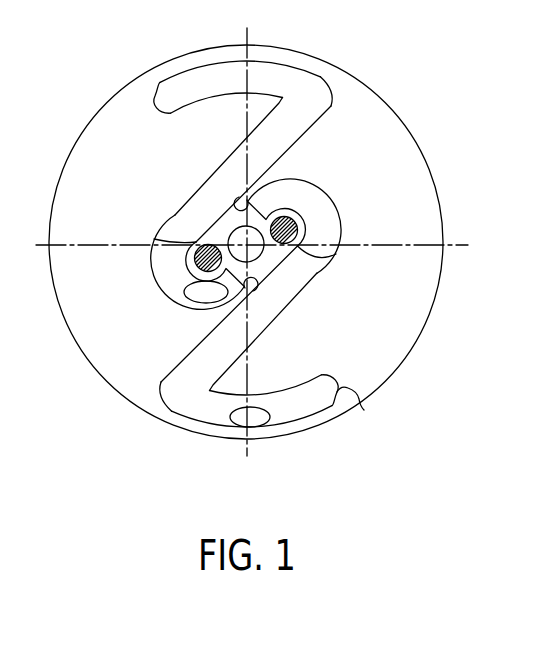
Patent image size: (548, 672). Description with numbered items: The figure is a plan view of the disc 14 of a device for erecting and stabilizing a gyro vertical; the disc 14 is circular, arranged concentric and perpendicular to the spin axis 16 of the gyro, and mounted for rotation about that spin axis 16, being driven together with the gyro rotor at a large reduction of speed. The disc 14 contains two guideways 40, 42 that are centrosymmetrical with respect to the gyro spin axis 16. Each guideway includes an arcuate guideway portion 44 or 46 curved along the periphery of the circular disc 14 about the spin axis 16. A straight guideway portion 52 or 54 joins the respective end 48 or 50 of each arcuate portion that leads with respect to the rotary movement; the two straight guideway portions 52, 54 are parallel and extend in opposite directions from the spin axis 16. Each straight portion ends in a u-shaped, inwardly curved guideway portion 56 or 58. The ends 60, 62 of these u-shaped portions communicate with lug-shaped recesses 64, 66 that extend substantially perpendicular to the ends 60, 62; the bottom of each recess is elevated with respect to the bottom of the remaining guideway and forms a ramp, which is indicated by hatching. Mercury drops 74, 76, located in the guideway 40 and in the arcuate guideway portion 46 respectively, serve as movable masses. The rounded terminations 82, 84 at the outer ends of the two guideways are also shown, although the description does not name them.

The disc 14 is at (378, 118).
The spin axis 16 is at (310, 282).
The guideway 40 is at (273, 62).
The guideway 42 is at (288, 428).
The arcuate guideway portion 44 is at (196, 78).
The arcuate guideway portion 46 is at (209, 417).
The end of arcuate guideway portion 48 is at (333, 100).
The end of arcuate guideway portion 50 is at (163, 384).
The straight guideway portion 52 is at (230, 158).
The straight guideway portion 54 is at (268, 322).
The u-shaped inwardly curved guideway portion 56 is at (168, 288).
The u-shaped inwardly curved guideway portion 58 is at (317, 226).
The end of u-shaped guideway portion 60 is at (257, 285).
The end of u-shaped guideway portion 62 is at (268, 170).
The lug-shaped recess 64 is at (200, 235).
The lug-shaped recess 66 is at (338, 257).
The mercury drop 74 is at (205, 303).
The mercury drop 76 is at (256, 408).
The rounded slot end 82 is at (163, 104).
The rounded slot end 84 is at (364, 410).